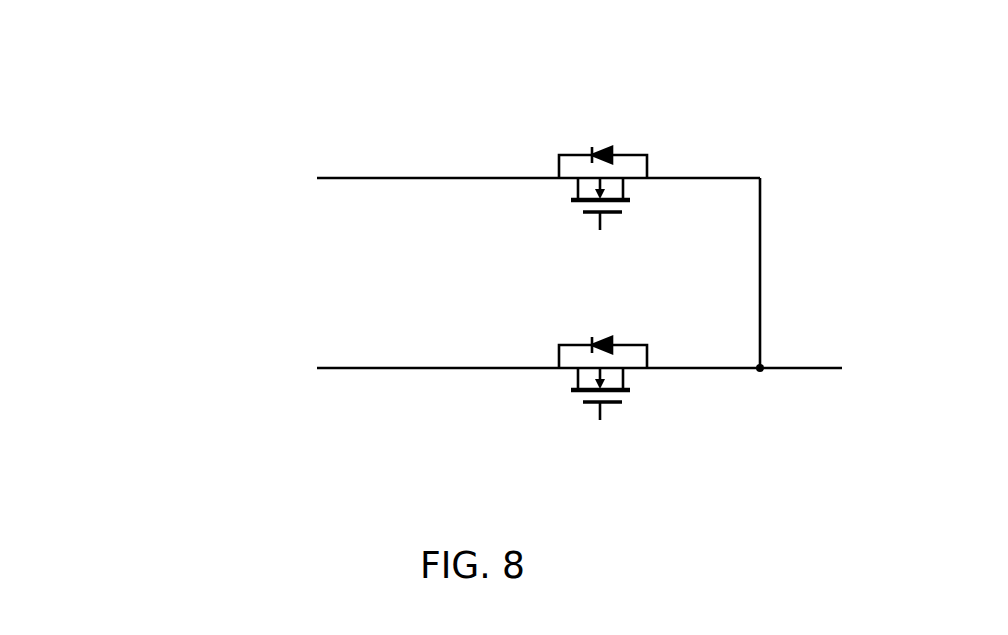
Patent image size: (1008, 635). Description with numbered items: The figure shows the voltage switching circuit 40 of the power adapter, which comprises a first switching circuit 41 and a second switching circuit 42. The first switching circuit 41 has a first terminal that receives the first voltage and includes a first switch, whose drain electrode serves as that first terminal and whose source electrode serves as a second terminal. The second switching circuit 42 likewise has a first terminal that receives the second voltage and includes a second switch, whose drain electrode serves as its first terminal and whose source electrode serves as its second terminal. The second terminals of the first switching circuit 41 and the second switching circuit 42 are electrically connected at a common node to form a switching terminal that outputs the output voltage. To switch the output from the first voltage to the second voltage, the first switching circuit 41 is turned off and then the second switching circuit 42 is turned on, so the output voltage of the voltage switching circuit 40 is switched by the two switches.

The voltage switching circuit 40 is at (461, 48).
The first switching circuit 41 is at (482, 173).
The second switching circuit 42 is at (462, 375).